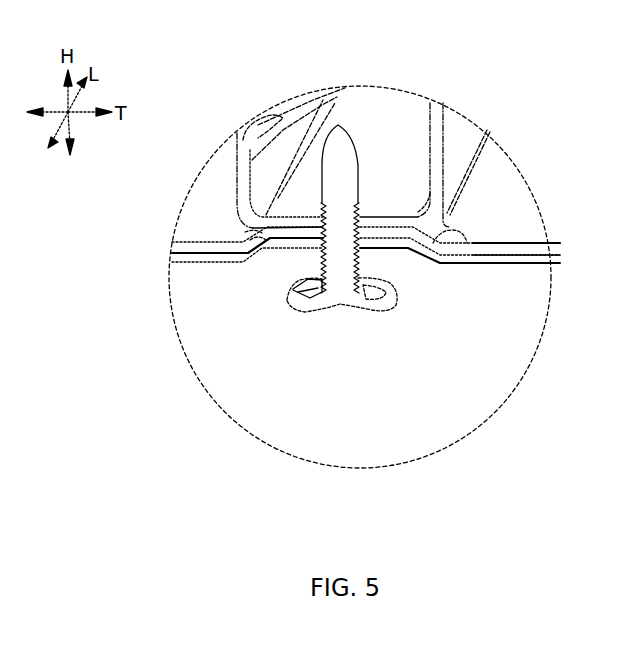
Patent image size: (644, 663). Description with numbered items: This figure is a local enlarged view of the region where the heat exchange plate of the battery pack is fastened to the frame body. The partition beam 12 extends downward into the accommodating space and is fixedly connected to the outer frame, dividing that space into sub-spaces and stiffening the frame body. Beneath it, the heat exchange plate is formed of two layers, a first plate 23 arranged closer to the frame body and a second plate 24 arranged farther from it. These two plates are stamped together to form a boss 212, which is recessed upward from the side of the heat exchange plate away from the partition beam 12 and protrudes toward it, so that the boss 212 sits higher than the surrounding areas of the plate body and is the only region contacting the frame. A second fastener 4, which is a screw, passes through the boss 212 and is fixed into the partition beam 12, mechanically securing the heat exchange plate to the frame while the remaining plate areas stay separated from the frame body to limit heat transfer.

The partition beam 12 is at (463, 140).
The first plate 23 is at (545, 250).
The second plate 24 is at (548, 262).
The boss 212 is at (470, 225).
The second fastener 4 is at (300, 293).